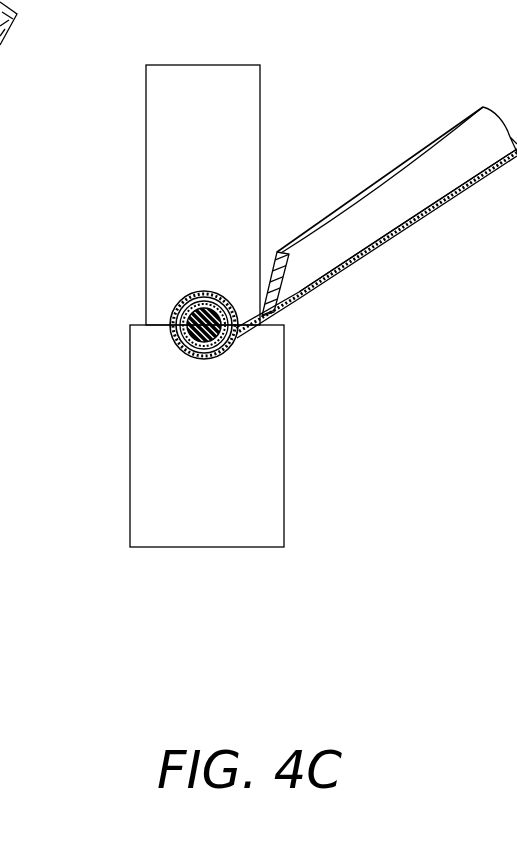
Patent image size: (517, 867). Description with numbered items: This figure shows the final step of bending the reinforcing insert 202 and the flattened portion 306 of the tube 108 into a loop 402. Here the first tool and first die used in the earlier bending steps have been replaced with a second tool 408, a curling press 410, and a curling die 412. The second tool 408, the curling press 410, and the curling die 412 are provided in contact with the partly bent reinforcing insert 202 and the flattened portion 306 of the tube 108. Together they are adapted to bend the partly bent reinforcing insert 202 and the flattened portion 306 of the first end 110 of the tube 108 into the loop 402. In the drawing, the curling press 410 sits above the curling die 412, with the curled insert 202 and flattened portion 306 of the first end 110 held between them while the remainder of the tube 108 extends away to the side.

The tube 108 is at (355, 146).
The first end 110 is at (226, 282).
The reinforcing insert 202 is at (285, 313).
The flattened portion 306 is at (164, 359).
The loop 402 is at (160, 298).
The second tool 408 is at (199, 356).
The curling press 410 is at (226, 173).
The curling die 412 is at (235, 456).